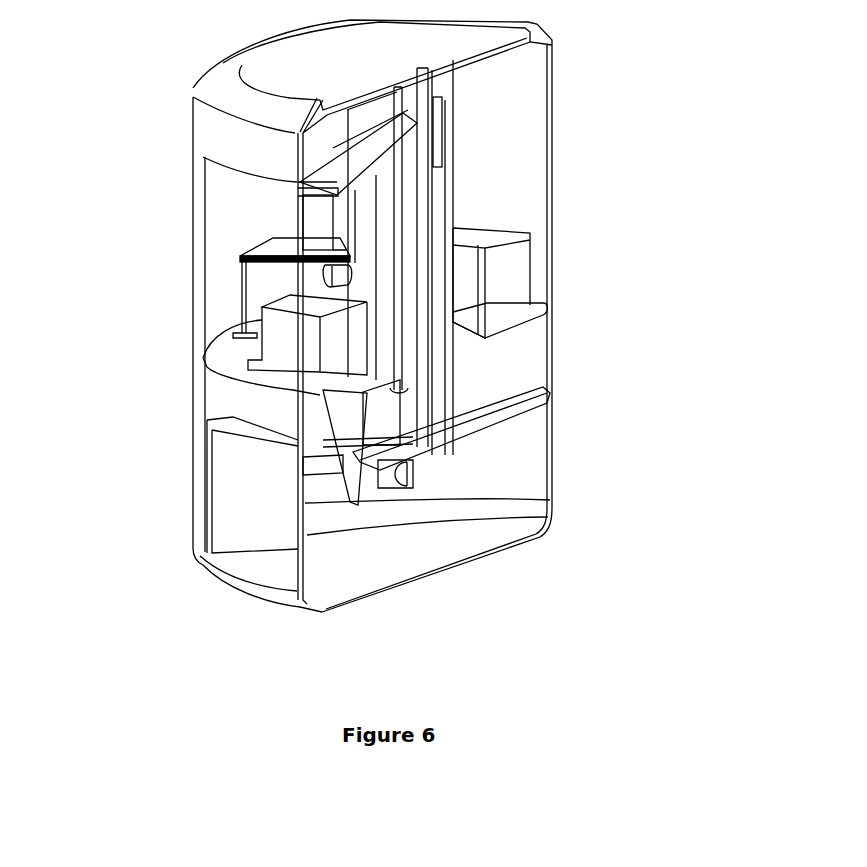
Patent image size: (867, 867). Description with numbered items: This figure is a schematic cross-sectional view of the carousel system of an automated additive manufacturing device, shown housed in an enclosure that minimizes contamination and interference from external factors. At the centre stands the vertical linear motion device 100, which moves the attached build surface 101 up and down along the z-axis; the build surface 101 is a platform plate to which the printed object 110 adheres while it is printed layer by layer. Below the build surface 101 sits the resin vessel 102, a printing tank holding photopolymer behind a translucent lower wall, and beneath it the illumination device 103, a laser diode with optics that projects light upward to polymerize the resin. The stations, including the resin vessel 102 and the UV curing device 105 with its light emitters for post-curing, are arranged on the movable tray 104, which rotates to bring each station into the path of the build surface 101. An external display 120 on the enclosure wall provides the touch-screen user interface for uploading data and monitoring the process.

The vertical linear motion device 100 is at (427, 191).
The build surface 101 is at (297, 245).
The 3D printed object 110 is at (360, 282).
The resin vessel 102 is at (277, 350).
The illumination device 103 is at (447, 466).
The movable tray 104 is at (456, 318).
The UV curing device 105 is at (503, 272).
The external display 120 is at (233, 507).